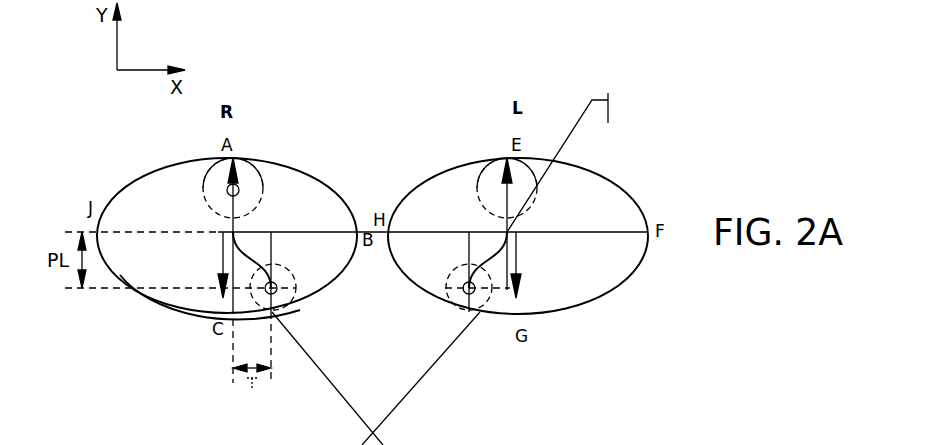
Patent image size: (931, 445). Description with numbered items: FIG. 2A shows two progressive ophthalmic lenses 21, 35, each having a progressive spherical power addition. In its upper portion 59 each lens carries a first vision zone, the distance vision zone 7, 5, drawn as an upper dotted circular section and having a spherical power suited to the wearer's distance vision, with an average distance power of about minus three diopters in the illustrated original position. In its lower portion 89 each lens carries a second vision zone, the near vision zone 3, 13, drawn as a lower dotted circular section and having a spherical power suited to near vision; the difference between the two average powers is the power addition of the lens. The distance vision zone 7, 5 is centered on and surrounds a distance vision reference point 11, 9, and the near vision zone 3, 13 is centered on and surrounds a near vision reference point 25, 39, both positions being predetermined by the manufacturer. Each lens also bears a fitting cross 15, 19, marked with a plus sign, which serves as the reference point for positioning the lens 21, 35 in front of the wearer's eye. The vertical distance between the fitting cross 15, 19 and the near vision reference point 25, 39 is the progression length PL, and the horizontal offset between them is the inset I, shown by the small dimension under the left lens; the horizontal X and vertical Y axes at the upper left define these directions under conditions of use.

The near vision zone 3 is at (297, 284).
The distance vision zone 5 is at (532, 180).
The distance vision zone 7 is at (207, 172).
The distance vision reference point 9 is at (502, 186).
The distance vision reference point 11 is at (240, 187).
The near vision zone 13 is at (446, 285).
The fitting cross 15 is at (233, 232).
The fitting cross 19 is at (507, 232).
The progressive ophthalmic lens 21 is at (152, 198).
The near vision reference point 25 is at (280, 294).
The progressive ophthalmic lens 35 is at (608, 212).
The near vision reference point 39 is at (462, 293).
The upper portion 59 is at (258, 160).
The lower portion 89 is at (180, 312).